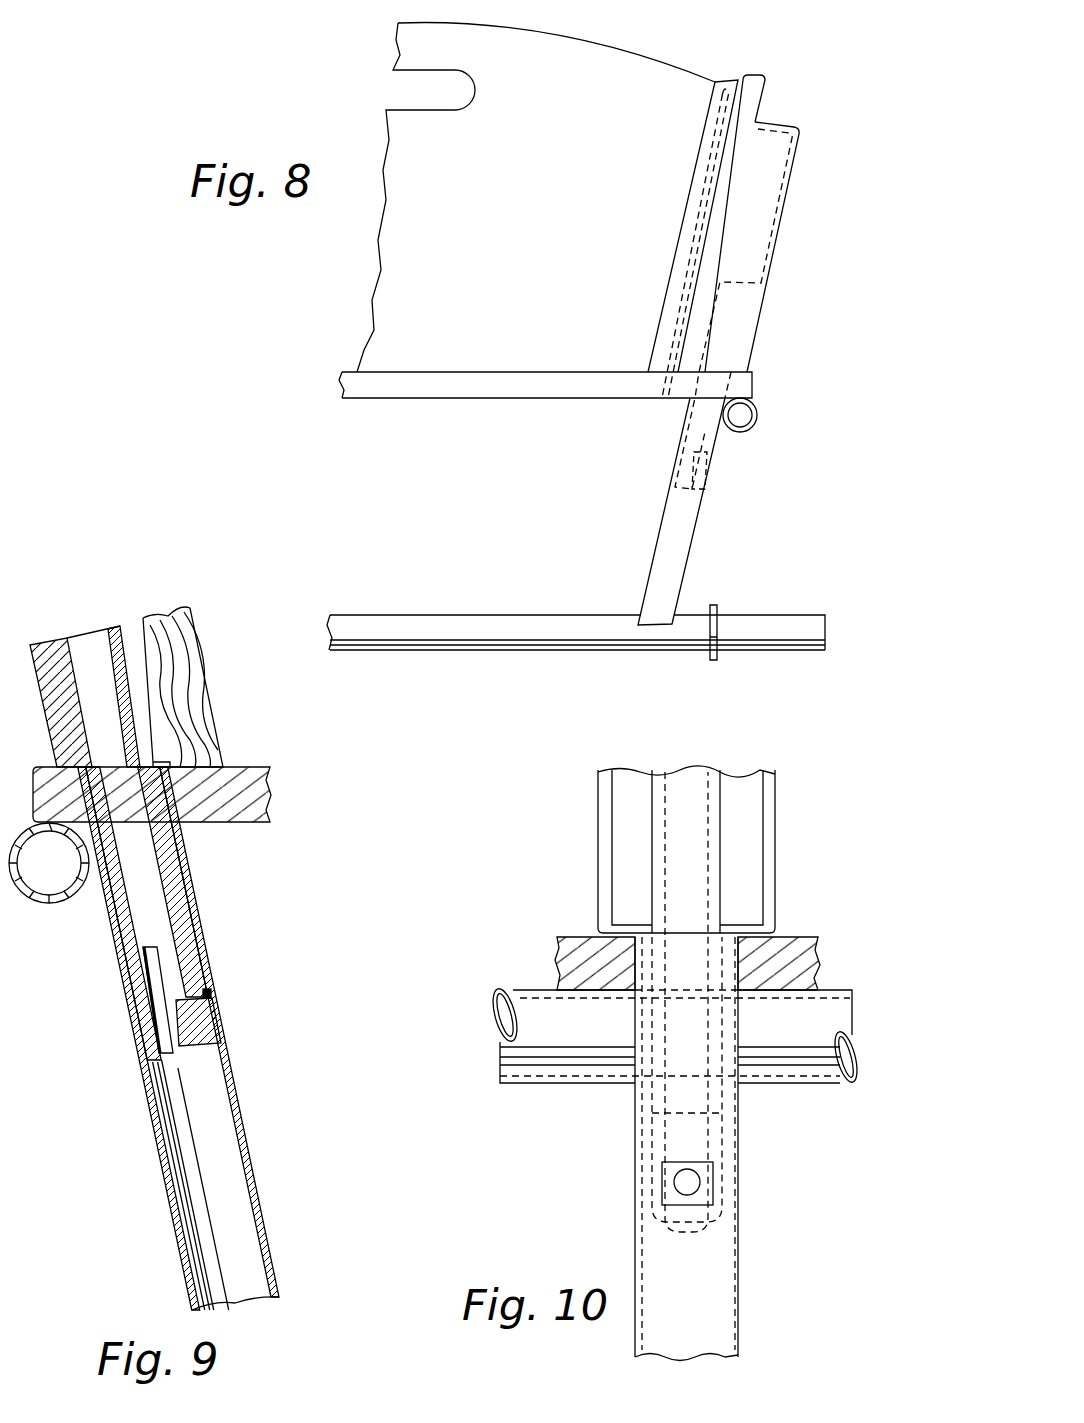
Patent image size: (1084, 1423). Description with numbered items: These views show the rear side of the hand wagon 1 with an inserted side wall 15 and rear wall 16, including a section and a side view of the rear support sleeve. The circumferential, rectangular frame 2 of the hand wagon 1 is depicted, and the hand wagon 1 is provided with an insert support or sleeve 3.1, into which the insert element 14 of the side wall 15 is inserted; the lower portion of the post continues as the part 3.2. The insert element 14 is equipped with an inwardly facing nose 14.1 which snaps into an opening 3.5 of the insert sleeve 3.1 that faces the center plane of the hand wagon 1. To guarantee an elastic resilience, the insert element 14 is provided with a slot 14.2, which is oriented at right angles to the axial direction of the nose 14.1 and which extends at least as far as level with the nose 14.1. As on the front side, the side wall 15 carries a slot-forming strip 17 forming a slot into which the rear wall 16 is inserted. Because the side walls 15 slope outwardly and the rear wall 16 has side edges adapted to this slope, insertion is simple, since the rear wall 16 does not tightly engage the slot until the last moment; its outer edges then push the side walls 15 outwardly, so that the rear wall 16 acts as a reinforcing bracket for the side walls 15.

In FIG. 8, the hand wagon 1 is at (500, 393).
In FIG. 9, the hand wagon 1 is at (268, 795).
In FIG. 10, the hand wagon 1 is at (568, 956).
In FIG. 8, the frame 2 is at (757, 415).
In FIG. 9, the frame 2 is at (55, 910).
In FIG. 10, the frame 2 is at (533, 1082).
In FIG. 8, the insert support 3.1 is at (655, 547).
In FIG. 10, the insert support 3.1 is at (740, 1277).
In FIG. 9, the lower post 3.2 is at (187, 1268).
In FIG. 10, the lower post 3.2 is at (686, 1357).
In FIG. 9, the opening 3.5 is at (211, 995).
In FIG. 10, the opening 3.5 is at (668, 1166).
In FIG. 8, the insert element 14 is at (771, 280).
In FIG. 9, the insert element 14 is at (48, 652).
In FIG. 10, the insert element 14 is at (598, 838).
In FIG. 8, the nose 14.1 is at (675, 473).
In FIG. 9, the nose 14.1 is at (218, 1017).
In FIG. 10, the nose 14.1 is at (677, 1184).
In FIG. 9, the slot 14.2 is at (162, 1002).
In FIG. 8, the side wall 15 is at (762, 76).
In FIG. 9, the side wall 15 is at (167, 622).
In FIG. 8, the rear wall 16 is at (495, 223).
In FIG. 8, the slot-forming strip 17 is at (725, 80).